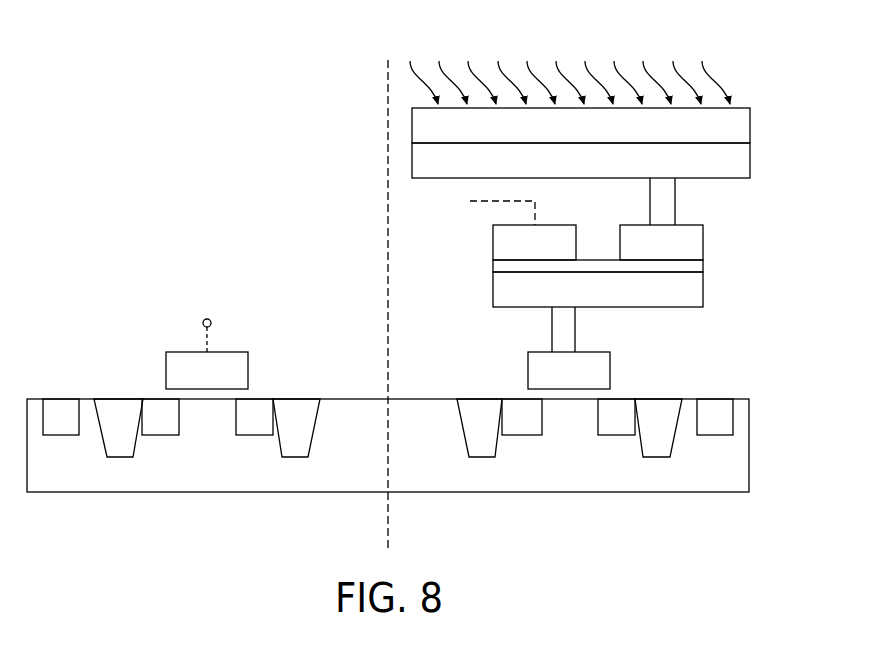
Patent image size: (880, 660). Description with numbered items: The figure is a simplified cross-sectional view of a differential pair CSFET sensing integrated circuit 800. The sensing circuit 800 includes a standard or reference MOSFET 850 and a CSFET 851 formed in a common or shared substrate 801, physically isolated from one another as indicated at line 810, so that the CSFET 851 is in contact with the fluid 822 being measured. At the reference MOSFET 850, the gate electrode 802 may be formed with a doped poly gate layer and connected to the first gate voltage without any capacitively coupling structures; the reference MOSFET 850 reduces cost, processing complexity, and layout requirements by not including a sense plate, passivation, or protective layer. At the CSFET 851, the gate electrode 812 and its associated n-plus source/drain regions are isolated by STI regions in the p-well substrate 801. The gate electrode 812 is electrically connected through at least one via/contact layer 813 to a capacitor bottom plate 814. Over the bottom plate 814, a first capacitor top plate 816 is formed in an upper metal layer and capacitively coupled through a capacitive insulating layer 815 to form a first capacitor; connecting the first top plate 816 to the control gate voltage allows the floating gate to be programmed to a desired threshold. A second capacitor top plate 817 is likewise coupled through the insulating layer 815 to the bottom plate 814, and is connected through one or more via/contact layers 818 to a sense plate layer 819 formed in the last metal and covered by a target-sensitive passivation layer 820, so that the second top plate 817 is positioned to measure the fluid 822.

The differential pair CSFET sensing integrated circuit 800 is at (96, 46).
The substrate 801 is at (711, 483).
The gate electrode 802 is at (248, 371).
The line 810 is at (388, 270).
The gate electrode 812 is at (610, 371).
The via/contact layer 813 is at (575, 325).
The capacitor bottom plate 814 is at (703, 291).
The capacitive insulating layer 815 is at (703, 266).
The first capacitor top plate 816 is at (493, 241).
The second capacitor top plate 817 is at (703, 244).
The via/contact layer 818 is at (675, 197).
The sense plate layer 819 is at (716, 171).
The passivation layer 820 is at (665, 136).
The fluid 822 is at (593, 56).
The reference MOSFET 850 is at (227, 552).
The CSFET 851 is at (590, 552).